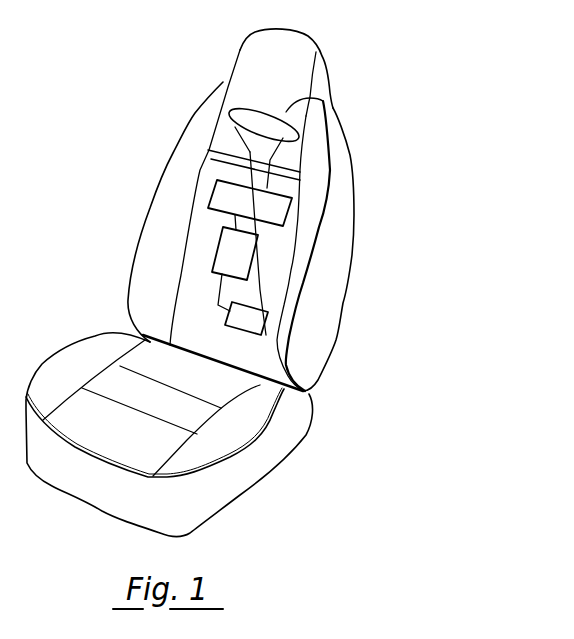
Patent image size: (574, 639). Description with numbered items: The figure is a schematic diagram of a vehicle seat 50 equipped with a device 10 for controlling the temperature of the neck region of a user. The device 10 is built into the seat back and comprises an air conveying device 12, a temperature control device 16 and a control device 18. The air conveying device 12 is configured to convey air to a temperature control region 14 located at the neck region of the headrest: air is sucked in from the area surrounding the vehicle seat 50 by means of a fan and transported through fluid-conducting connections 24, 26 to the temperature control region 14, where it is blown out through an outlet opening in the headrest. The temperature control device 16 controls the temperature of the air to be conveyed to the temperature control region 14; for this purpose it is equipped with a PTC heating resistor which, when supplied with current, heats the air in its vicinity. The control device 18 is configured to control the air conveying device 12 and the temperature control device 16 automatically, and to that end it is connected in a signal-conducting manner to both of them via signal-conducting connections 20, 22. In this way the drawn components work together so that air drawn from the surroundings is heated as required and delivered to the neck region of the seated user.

The device for controlling the temperature of the neck region 10 is at (202, 148).
The air conveying device 12 is at (227, 252).
The temperature control region 14 is at (276, 127).
The temperature control device 16 is at (228, 196).
The control device 18 is at (266, 313).
The signal-conducting connection 20 is at (248, 278).
The signal-conducting connection 22 is at (220, 302).
The fluid-conducting connection 24 is at (258, 237).
The fluid-conducting connection 26 is at (290, 197).
The vehicle seat 50 is at (327, 360).